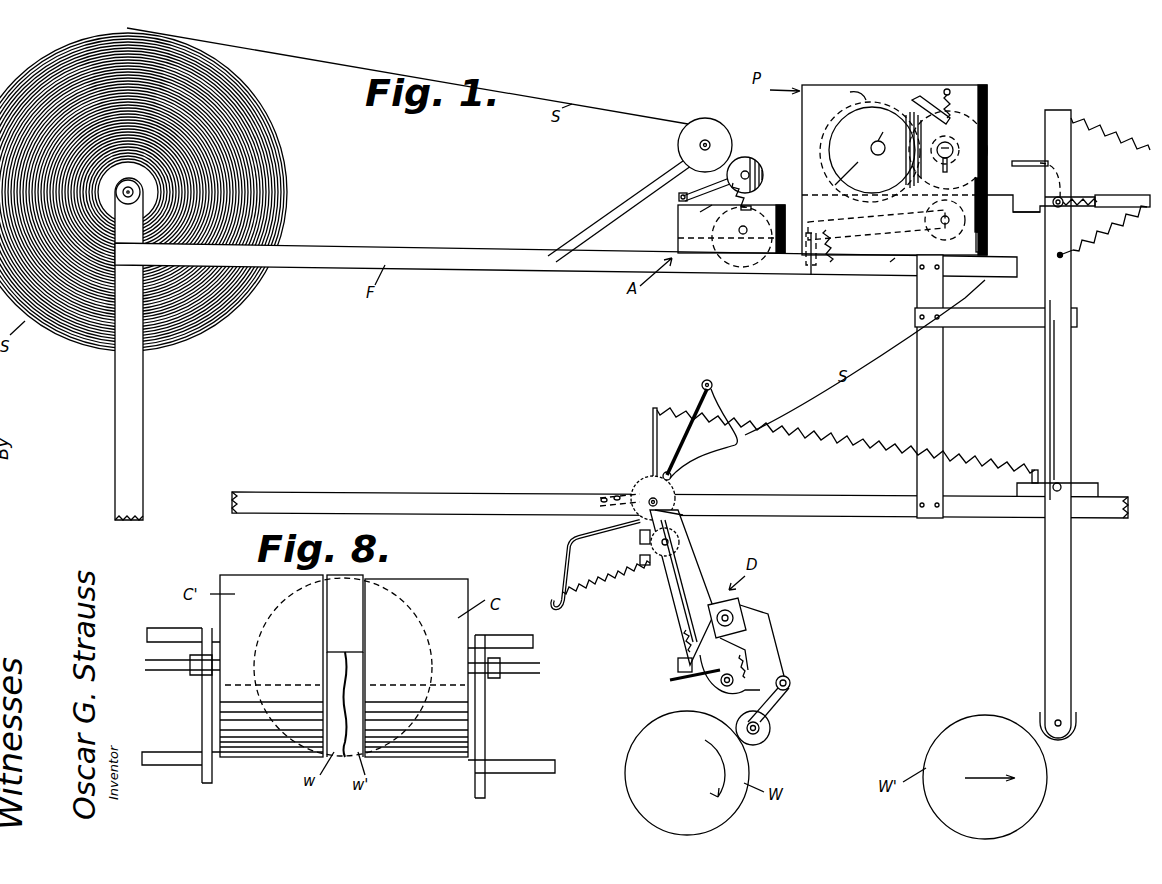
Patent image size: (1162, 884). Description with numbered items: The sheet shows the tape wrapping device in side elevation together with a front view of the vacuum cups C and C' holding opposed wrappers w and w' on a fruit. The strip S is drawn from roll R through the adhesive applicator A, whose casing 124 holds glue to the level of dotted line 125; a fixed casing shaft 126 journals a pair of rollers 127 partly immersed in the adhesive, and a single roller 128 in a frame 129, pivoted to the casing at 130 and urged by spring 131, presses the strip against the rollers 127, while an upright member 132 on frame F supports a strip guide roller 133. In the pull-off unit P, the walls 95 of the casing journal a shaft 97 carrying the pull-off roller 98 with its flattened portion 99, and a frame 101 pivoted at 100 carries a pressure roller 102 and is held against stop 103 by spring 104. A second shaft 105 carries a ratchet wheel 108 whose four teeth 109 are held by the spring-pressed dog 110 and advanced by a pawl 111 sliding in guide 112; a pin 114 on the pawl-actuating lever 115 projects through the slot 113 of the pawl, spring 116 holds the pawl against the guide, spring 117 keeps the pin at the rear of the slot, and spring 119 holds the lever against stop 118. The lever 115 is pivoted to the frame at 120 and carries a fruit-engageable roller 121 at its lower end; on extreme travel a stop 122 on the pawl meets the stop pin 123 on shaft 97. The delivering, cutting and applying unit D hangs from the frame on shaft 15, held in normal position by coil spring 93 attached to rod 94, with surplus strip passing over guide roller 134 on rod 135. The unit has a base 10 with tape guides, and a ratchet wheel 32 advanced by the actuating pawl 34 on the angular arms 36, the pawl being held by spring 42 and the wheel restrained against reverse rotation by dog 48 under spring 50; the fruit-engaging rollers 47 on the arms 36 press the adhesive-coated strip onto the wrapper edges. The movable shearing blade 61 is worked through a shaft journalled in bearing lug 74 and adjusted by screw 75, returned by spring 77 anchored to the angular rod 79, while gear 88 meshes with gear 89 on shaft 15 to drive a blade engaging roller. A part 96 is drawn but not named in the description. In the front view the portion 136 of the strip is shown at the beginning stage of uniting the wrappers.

In FIG. 1, the base 10 is at (690, 588).
In FIG. 1, the shaft 15 is at (660, 500).
In FIG. 1, the ratchet wheel 32 is at (732, 612).
In FIG. 1, the actuating pawl 34 is at (752, 642).
In FIG. 1, the angular arms 36 is at (776, 700).
In FIG. 1, the spring 42 is at (735, 682).
In FIG. 1, the wrapped-fruit engaging roller 47 is at (772, 735).
In FIG. 1, the dog 48 is at (724, 613).
In FIG. 1, the spring 50 is at (682, 640).
In FIG. 1, the movable shearing blade 61 is at (748, 665).
In FIG. 1, the bearing lug 74 is at (678, 664).
In FIG. 1, the screw 75 is at (660, 598).
In FIG. 1, the spring 77 is at (616, 590).
In FIG. 1, the angular rod 79 is at (562, 540).
In FIG. 1, the gear 88 is at (680, 542).
In FIG. 1, the gear 89 is at (637, 489).
In FIG. 1, the coil spring 93 is at (846, 442).
In FIG. 1, the rod 94 is at (653, 427).
In FIG. 1, the casing walls 95 is at (802, 122).
In FIG. 1, the support 96 is at (890, 262).
In FIG. 1, the shaft 97 is at (955, 152).
In FIG. 1, the strip pull-off roller 98 is at (985, 124).
In FIG. 1, the flattened portion 99 is at (986, 212).
In FIG. 1, the pivot 100 is at (935, 226).
In FIG. 1, the frame 101 is at (840, 226).
In FIG. 1, the strip pressure roller 102 is at (984, 240).
In FIG. 1, the stop 103 is at (810, 267).
In FIG. 1, the spring 104 is at (836, 250).
In FIG. 1, the second shaft 105 is at (880, 141).
In FIG. 1, the ratchet wheel 108 is at (833, 179).
In FIG. 1, the teeth 109 is at (872, 92).
In FIG. 1, the spring-pressed dog 110 is at (918, 100).
In FIG. 1, the pawl 111 is at (1010, 196).
In FIG. 1, the guide 112 is at (1033, 161).
In FIG. 1, the longitudinal slot 113 is at (1032, 216).
In FIG. 1, the pin 114 is at (1068, 200).
In FIG. 1, the pawl-actuating lever 115 is at (1072, 306).
In FIG. 1, the spring 116 is at (1120, 227).
In FIG. 1, the spring 117 is at (1118, 196).
In FIG. 1, the stop 118 is at (1035, 316).
In FIG. 1, the spring 119 is at (1093, 125).
In FIG. 1, the pivot 120 is at (1062, 486).
In FIG. 1, the fruit-engageable roller 121 is at (1077, 730).
In FIG. 1, the stop 122 is at (1048, 170).
In FIG. 1, the stop pin 123 is at (957, 176).
In FIG. 1, the casing 124 is at (678, 226).
In FIG. 1, the dotted line 125 is at (749, 268).
In FIG. 1, the fixed casing shaft 126 is at (747, 229).
In FIG. 1, the rollers 127 is at (749, 204).
In FIG. 1, the roller 128 is at (752, 175).
In FIG. 1, the frame 129 is at (690, 197).
In FIG. 1, the pivot 130 is at (679, 201).
In FIG. 1, the spring 131 is at (700, 215).
In FIG. 1, the upright member 132 is at (612, 215).
In FIG. 1, the strip guide roller 133 is at (716, 135).
In FIG. 1, the guide roller 134 is at (713, 384).
In FIG. 1, the rod 135 is at (680, 458).
In FIG. 8, the portion of the strip 136 is at (352, 613).